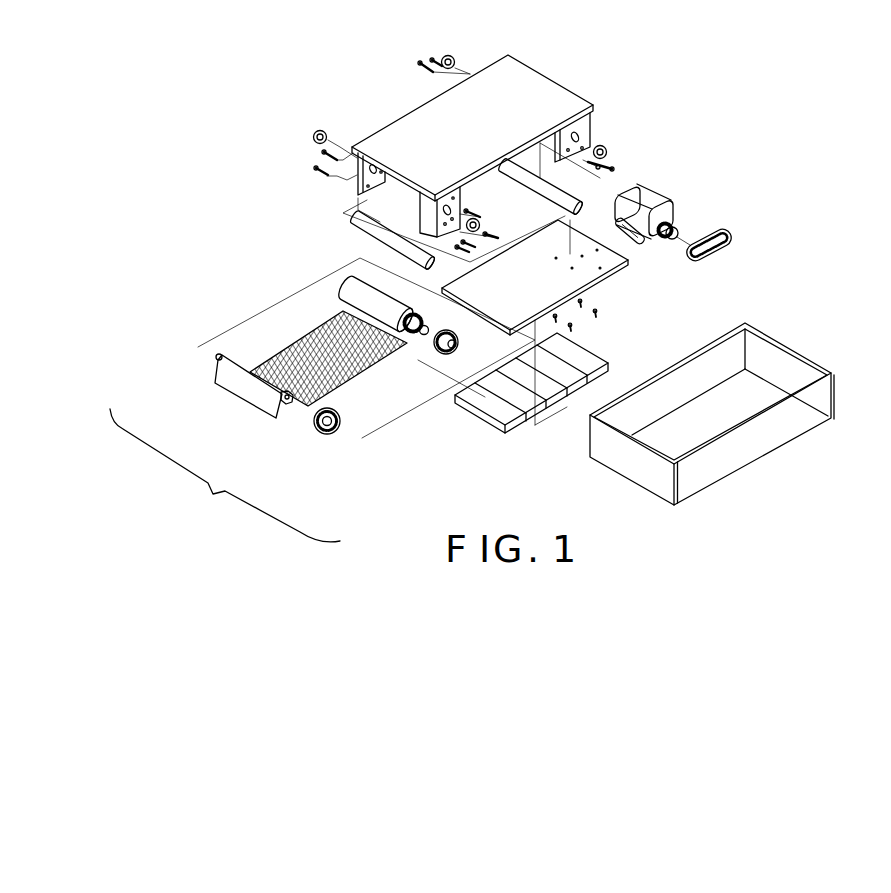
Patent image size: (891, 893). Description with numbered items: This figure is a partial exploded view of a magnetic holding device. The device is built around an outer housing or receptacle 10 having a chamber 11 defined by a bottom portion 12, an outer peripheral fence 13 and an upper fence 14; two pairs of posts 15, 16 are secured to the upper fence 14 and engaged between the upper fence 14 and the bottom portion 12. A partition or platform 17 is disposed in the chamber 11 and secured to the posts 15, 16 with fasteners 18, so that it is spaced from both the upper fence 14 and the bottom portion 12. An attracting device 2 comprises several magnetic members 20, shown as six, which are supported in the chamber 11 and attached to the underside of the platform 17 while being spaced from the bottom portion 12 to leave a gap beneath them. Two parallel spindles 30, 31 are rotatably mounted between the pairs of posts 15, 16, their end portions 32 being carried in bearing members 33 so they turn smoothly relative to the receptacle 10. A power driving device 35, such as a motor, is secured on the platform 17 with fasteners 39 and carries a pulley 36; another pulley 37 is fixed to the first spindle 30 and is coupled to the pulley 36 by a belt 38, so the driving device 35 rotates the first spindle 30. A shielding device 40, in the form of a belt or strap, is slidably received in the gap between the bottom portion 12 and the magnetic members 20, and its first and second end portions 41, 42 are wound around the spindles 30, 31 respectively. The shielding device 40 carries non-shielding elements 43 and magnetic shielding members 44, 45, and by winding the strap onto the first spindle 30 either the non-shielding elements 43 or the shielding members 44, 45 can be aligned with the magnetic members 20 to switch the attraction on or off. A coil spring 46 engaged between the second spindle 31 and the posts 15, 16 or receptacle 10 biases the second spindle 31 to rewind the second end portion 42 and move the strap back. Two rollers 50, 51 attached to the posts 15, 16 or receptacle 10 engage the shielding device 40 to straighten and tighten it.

The attracting device 2 is at (460, 426).
The receptacle 10 is at (730, 460).
The chamber 11 is at (657, 437).
The bottom portion 12 is at (750, 402).
The outer peripheral fence 13 is at (808, 372).
The upper fence 14 is at (508, 82).
The post 15 is at (357, 188).
The post 16 is at (583, 122).
The platform 17 is at (603, 263).
The fasteners 18 is at (598, 176).
The magnetic members 20 is at (557, 382).
The first spindle 30 is at (430, 322).
The second spindle 31 is at (280, 393).
The end portions 32 is at (216, 358).
The bearing members 33 is at (607, 150).
The power driving device 35 is at (653, 208).
The pulley 36 is at (676, 228).
The pulley 37 is at (453, 352).
The belt 38 is at (723, 246).
The fasteners 39 is at (557, 323).
The shielding device 40 is at (353, 368).
The first end portion 41 is at (416, 333).
The second end portion 42 is at (226, 356).
The non-shielding elements 43 is at (290, 342).
The magnetic shielding members 44 is at (357, 308).
The magnetic shielding members 45 is at (282, 422).
The coil spring 46 is at (318, 436).
The roller 50 is at (531, 183).
The roller 51 is at (373, 238).